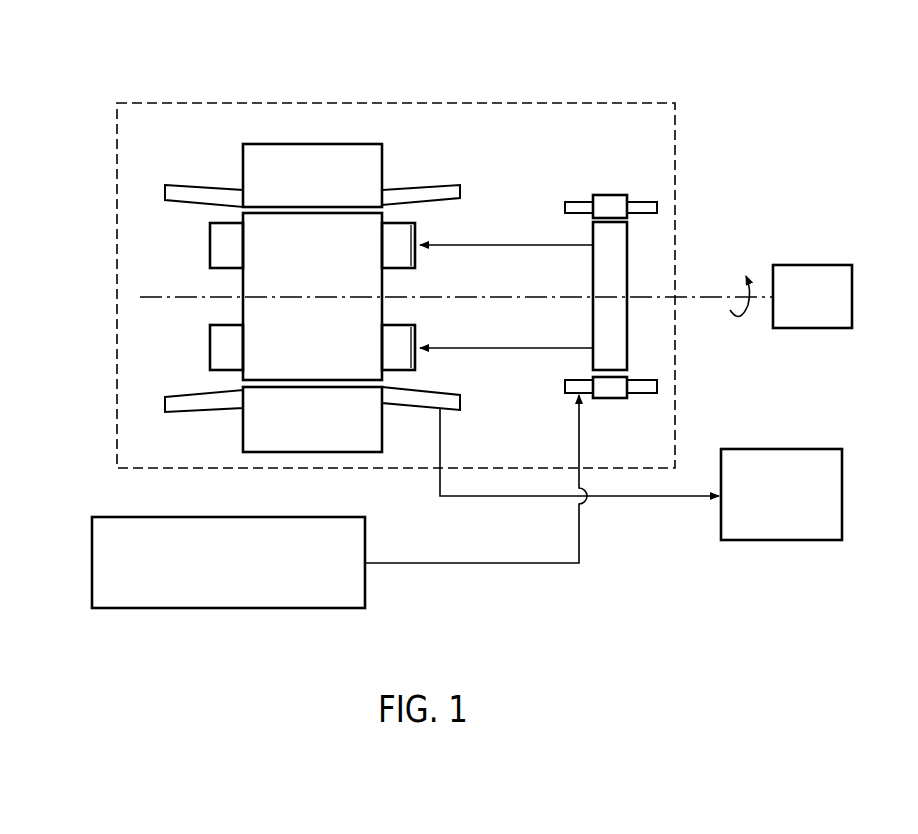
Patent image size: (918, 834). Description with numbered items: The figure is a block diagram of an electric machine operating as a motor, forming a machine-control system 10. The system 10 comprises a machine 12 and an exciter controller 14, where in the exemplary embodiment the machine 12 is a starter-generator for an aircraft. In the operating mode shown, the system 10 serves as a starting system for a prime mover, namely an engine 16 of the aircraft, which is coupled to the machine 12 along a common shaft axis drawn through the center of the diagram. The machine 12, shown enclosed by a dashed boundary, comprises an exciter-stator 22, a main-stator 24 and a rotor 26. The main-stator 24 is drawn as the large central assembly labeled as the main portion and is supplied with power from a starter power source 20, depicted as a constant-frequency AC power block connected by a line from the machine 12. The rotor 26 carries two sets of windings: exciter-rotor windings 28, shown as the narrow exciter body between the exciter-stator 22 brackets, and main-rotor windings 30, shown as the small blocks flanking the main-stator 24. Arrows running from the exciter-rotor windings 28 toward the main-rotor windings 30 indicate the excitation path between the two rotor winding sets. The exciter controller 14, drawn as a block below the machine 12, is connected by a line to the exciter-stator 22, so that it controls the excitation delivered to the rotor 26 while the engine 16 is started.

The machine-control system 10 is at (556, 83).
The machine 12 is at (213, 103).
The exciter controller 14 is at (92, 568).
The engine 16 is at (818, 265).
The starter power source 20 is at (787, 449).
The exciter-stator 22 is at (616, 399).
The main-stator 24 is at (357, 144).
The rotor 26 is at (700, 296).
The exciter-rotor windings 28 is at (593, 280).
The main-rotor windings 30 is at (210, 246).